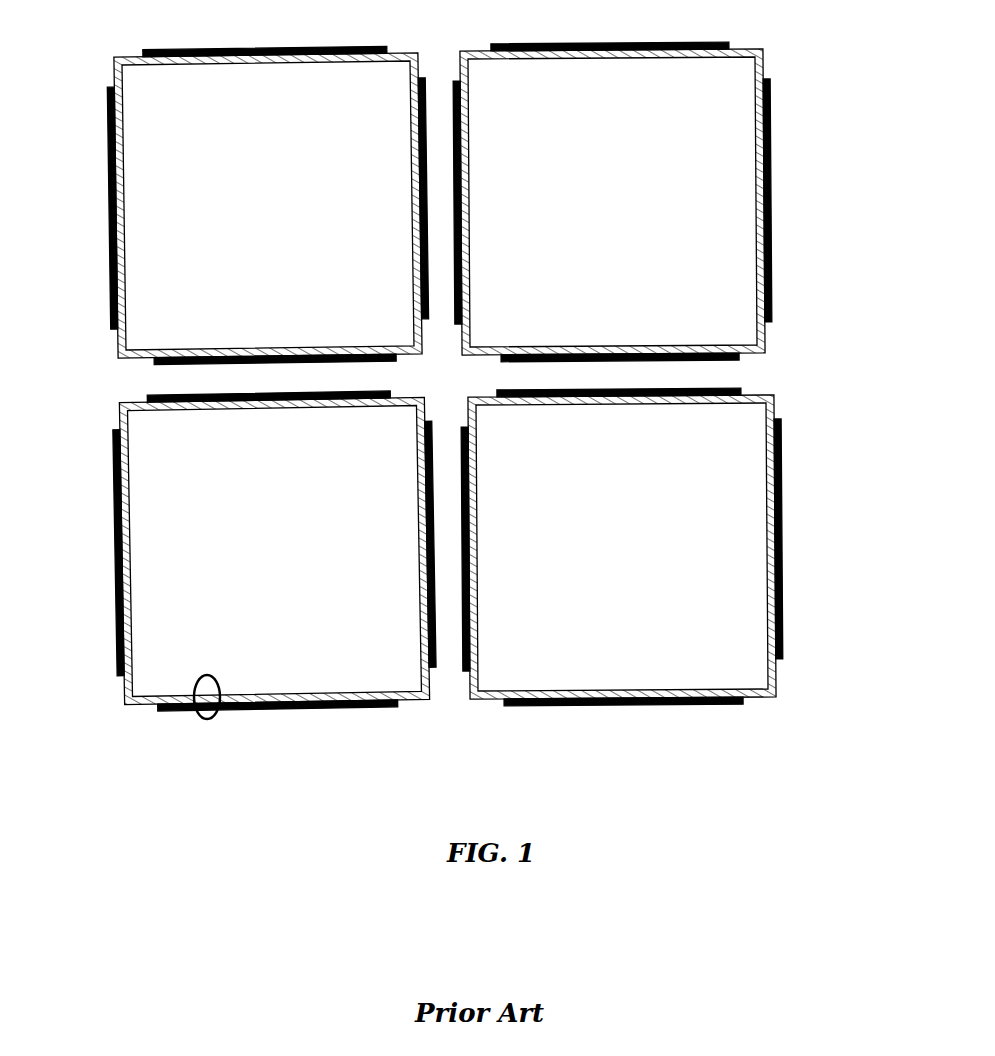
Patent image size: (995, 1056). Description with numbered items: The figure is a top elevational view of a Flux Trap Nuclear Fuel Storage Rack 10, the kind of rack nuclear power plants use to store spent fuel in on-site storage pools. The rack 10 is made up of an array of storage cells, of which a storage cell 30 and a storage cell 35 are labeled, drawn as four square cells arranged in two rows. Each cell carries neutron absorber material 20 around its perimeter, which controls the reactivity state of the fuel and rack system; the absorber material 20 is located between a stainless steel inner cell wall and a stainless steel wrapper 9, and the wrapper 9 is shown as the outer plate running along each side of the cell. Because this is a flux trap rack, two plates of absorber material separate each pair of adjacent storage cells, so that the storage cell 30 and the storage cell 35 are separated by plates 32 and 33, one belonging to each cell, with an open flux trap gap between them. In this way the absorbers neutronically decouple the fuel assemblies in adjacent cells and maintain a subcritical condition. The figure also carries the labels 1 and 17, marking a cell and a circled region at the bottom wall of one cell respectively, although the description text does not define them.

The fuel storage cell 1 is at (621, 690).
The stainless steel wrapper 9 is at (520, 705).
The Flux Trap Nuclear Fuel Storage Rack 10 is at (450, 420).
The weld joint 17 is at (197, 720).
The neutron absorber material 20 is at (778, 625).
The storage cell 30 is at (253, 222).
The plate 32 is at (418, 175).
The plate 33 is at (470, 143).
The storage cell 35 is at (605, 151).